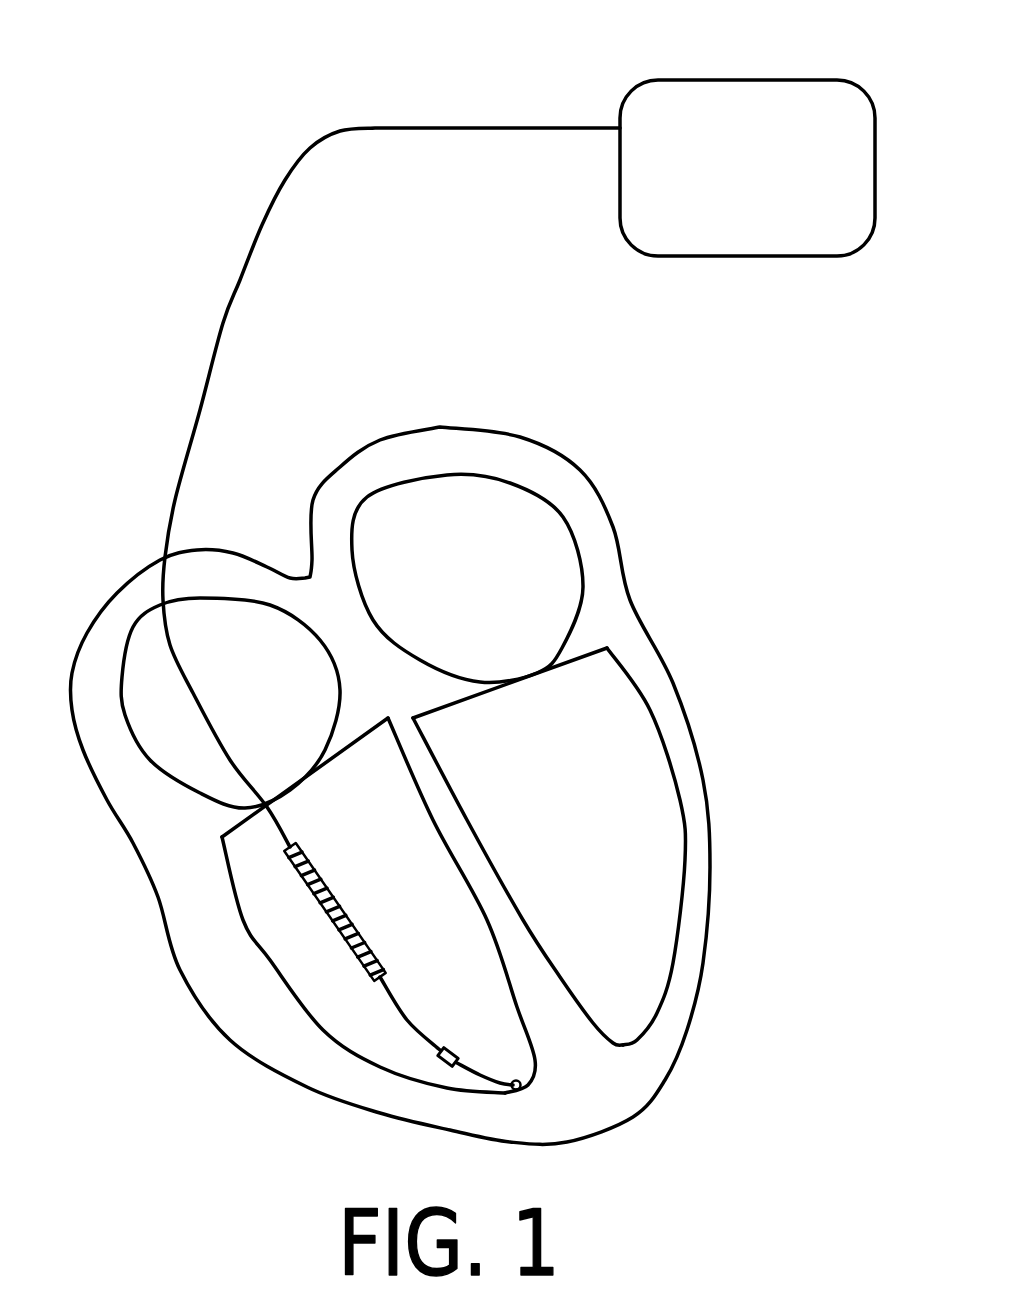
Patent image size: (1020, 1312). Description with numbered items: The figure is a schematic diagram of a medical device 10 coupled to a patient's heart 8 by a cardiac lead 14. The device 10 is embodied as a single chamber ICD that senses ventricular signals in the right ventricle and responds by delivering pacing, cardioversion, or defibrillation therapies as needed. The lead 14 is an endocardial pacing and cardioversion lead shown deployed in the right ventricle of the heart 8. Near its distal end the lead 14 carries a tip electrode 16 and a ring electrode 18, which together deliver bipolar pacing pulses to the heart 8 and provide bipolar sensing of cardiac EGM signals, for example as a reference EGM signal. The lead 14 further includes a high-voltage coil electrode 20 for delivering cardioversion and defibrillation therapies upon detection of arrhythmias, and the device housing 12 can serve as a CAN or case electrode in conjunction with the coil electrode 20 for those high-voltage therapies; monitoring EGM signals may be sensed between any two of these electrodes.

The heart 8 is at (463, 426).
The medical device 10 is at (740, 179).
The device housing 12 is at (789, 240).
The cardiac lead 14 is at (398, 652).
The tip electrode 16 is at (517, 1090).
The ring electrode 18 is at (457, 1053).
The high-voltage coil electrode 20 is at (337, 901).